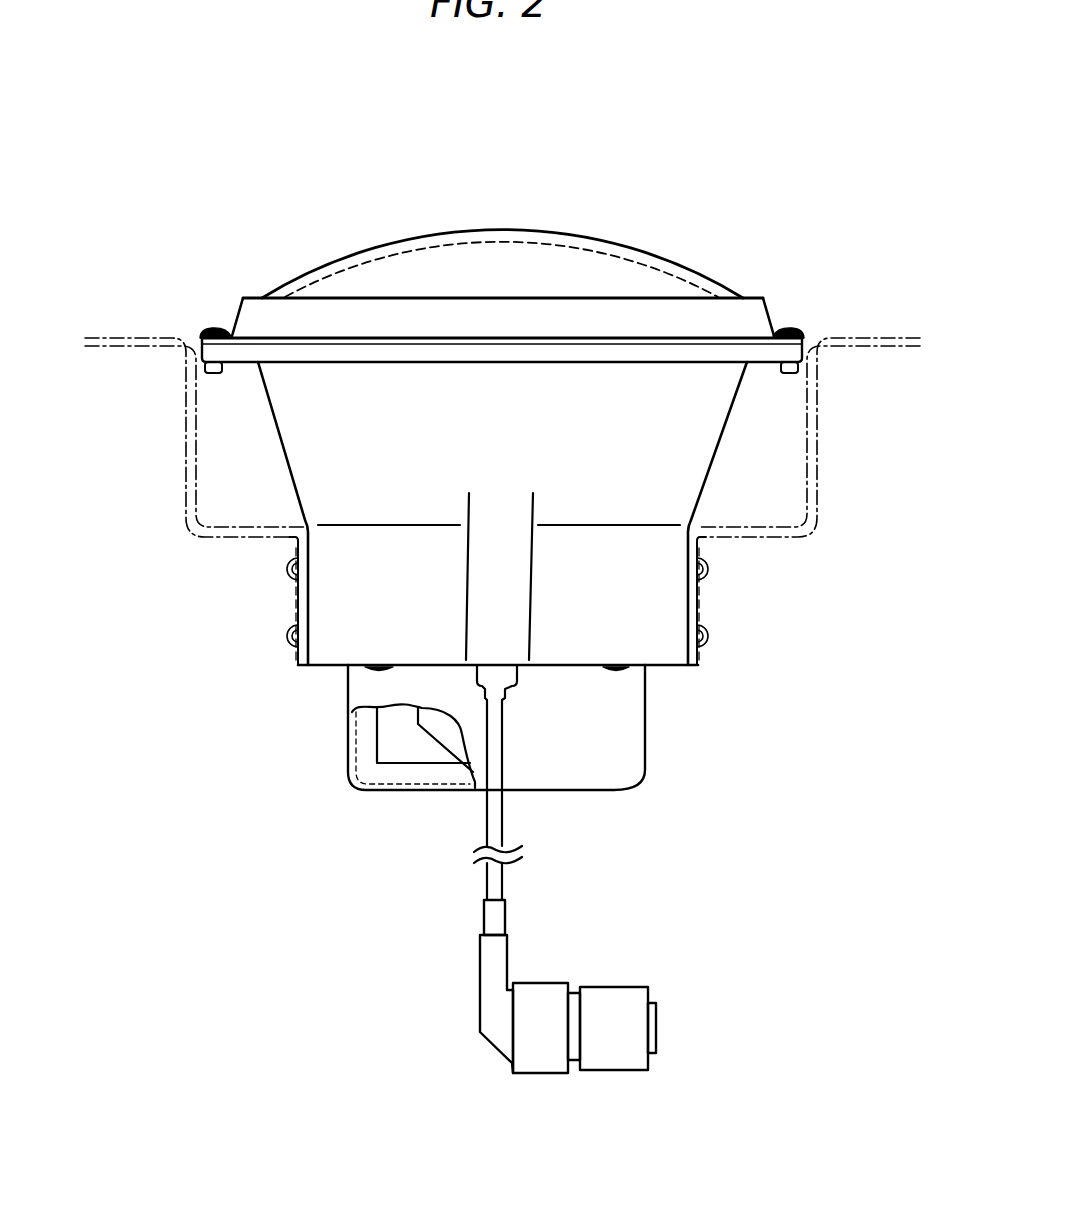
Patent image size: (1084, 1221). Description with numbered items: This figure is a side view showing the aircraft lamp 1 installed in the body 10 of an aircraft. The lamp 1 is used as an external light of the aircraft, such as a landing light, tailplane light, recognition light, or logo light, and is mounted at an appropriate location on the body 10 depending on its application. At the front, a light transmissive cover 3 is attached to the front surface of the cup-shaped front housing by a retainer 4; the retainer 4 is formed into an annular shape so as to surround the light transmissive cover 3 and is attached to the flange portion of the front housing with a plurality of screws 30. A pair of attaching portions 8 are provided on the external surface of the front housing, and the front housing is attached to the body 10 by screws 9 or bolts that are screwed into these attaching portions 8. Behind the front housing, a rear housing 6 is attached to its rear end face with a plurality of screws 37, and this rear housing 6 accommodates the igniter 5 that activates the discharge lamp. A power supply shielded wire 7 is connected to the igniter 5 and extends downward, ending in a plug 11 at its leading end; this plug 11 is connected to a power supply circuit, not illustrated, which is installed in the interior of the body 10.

The aircraft lamp 1 is at (349, 230).
The light transmissive cover 3 is at (600, 237).
The retainer 4 is at (240, 303).
The screws 30 is at (786, 332).
The body 10 is at (858, 337).
The attaching portions 8 is at (302, 597).
The screws 9 is at (292, 566).
The rear housing 6 is at (646, 729).
The igniter 5 is at (383, 738).
The screws 37 is at (610, 669).
The power supply shielded wire 7 is at (495, 817).
The plug 11 is at (615, 985).